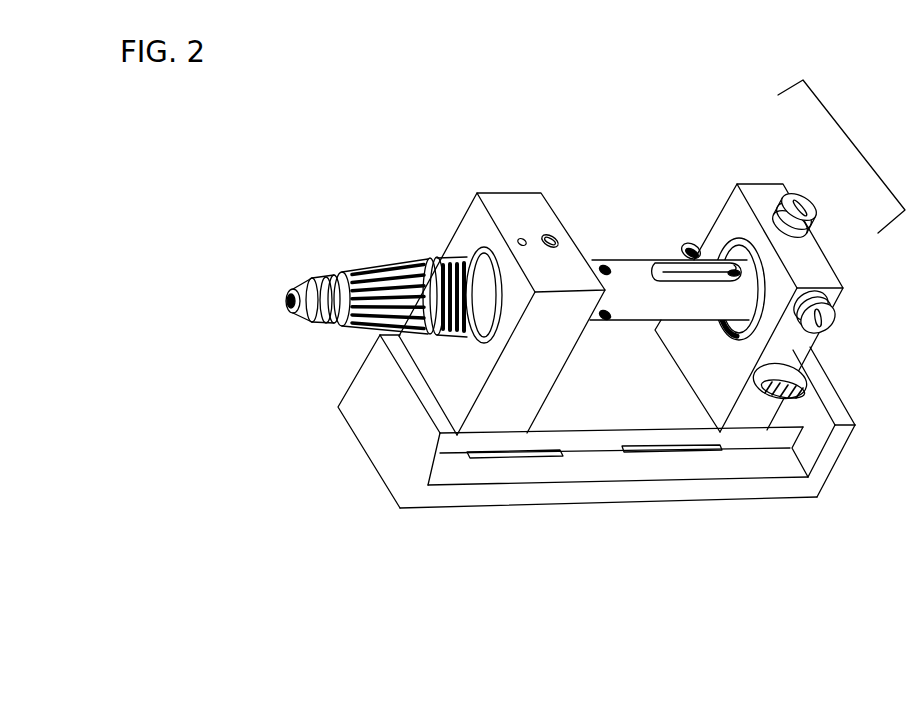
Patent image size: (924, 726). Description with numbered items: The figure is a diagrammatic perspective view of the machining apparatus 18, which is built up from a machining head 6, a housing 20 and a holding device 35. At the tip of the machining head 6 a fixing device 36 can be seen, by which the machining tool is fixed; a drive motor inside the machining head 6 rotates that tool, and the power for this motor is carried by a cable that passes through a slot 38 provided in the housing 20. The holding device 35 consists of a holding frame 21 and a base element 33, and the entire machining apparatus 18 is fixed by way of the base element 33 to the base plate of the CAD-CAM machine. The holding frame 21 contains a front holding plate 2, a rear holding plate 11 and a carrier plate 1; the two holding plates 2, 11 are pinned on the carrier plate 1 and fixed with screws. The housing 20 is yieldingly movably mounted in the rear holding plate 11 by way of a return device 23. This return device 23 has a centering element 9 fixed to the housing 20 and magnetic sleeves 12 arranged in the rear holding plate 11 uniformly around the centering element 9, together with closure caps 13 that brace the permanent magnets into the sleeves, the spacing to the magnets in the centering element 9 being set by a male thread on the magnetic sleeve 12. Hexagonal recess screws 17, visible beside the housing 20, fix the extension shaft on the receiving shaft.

The carrier plate 1 is at (609, 438).
The front holding plate 2 is at (517, 408).
The machining head 6 is at (351, 270).
The centering element 9 is at (742, 260).
The rear holding plate 11 is at (745, 425).
The magnetic sleeves 12 is at (793, 242).
The closure caps 13 is at (803, 203).
The hexagonal recess screws 17 is at (607, 314).
The machining apparatus 18 is at (537, 130).
The housing 20 is at (665, 302).
The holding frame 21 is at (622, 593).
The return device 23 is at (852, 148).
The base element 33 is at (784, 487).
The holding device 35 is at (683, 653).
The fixing device 36 is at (288, 306).
The slot 38 is at (690, 256).